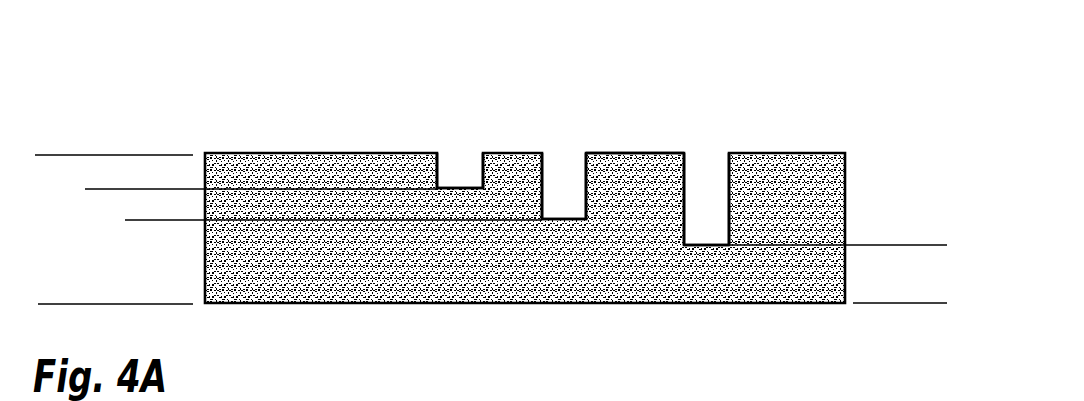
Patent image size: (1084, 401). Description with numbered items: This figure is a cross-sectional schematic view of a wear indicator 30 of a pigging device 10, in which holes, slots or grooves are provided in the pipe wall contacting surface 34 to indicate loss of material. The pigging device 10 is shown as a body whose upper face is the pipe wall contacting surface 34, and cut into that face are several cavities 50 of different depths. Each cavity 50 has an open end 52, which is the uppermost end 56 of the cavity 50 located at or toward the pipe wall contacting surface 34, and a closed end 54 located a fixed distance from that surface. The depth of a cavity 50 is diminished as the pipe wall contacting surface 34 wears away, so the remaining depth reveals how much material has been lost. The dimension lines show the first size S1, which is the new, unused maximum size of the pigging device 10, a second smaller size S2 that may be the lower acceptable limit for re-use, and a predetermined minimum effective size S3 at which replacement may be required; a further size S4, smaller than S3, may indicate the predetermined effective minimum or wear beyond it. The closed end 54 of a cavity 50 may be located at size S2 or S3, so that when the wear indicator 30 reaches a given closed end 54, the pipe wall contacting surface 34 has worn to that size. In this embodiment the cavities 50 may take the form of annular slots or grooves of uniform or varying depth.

The pigging device 10 is at (858, 128).
The wear indicator 30 is at (480, 130).
The cavity 50 is at (581, 181).
The pipe wall contacting surface 34 is at (638, 153).
The uppermost end 56 is at (685, 152).
The open end 52 is at (728, 185).
The closed end 54 is at (708, 244).
The first size S1 is at (53, 303).
The second smaller size S2 is at (102, 303).
The predetermined minimum effective size S3 is at (150, 221).
The size S4 is at (904, 246).